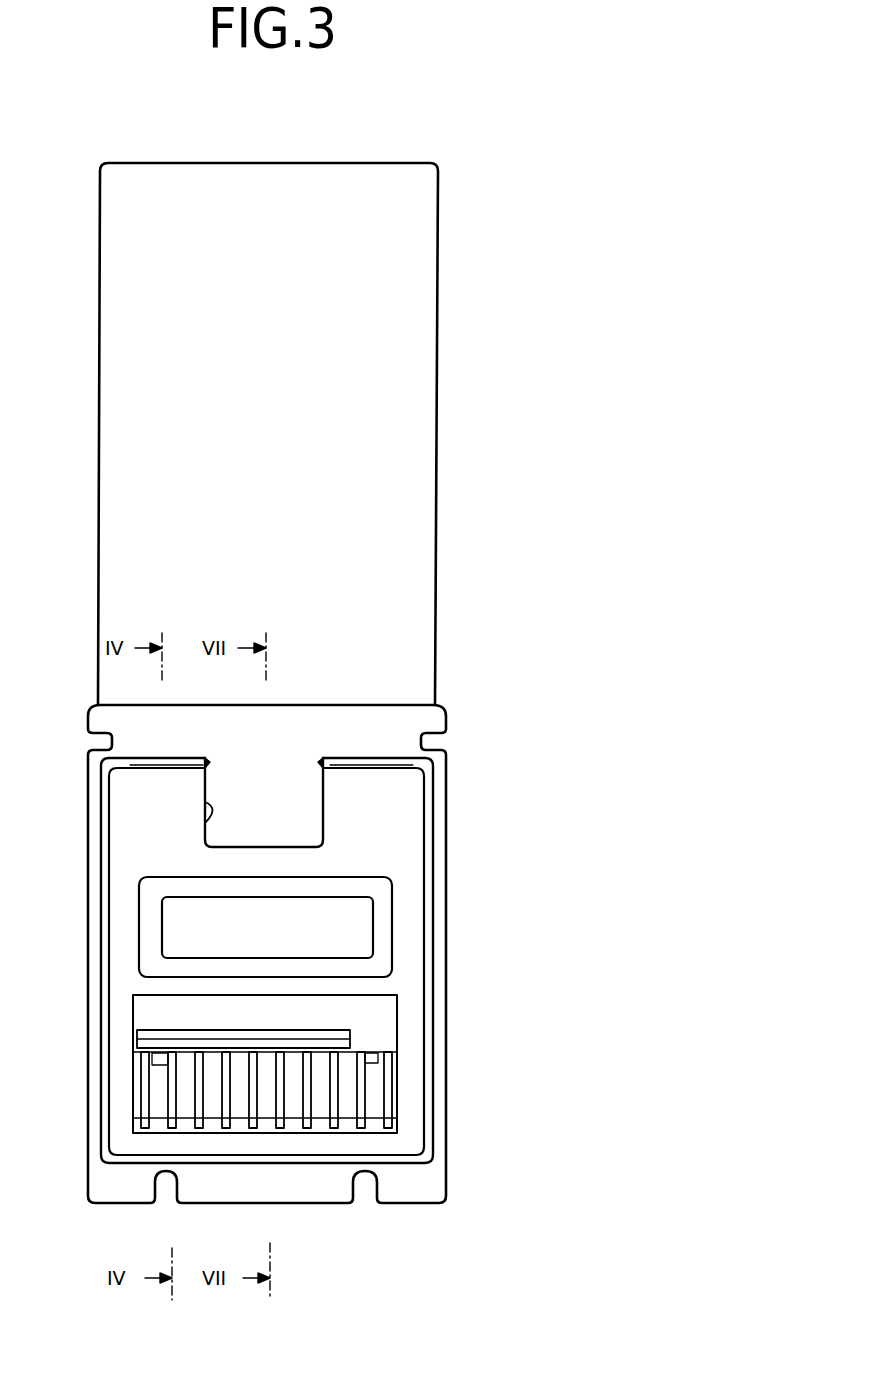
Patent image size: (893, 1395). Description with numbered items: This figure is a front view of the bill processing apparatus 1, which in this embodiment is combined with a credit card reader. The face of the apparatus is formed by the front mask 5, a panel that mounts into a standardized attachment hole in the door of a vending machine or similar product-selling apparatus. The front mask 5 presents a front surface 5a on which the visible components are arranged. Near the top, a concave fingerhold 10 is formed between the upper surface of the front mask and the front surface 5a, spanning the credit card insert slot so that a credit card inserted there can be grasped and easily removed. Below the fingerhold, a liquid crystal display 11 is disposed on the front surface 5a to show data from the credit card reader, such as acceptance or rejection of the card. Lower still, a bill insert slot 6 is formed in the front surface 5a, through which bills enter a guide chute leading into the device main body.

The bill processing apparatus 1 is at (497, 400).
The front mask 5 is at (427, 778).
The front surface 5a is at (410, 825).
The concave fingerhold 10 is at (207, 820).
The liquid crystal display (LCD) 11 is at (360, 931).
The bill insert slot 6 is at (387, 1082).